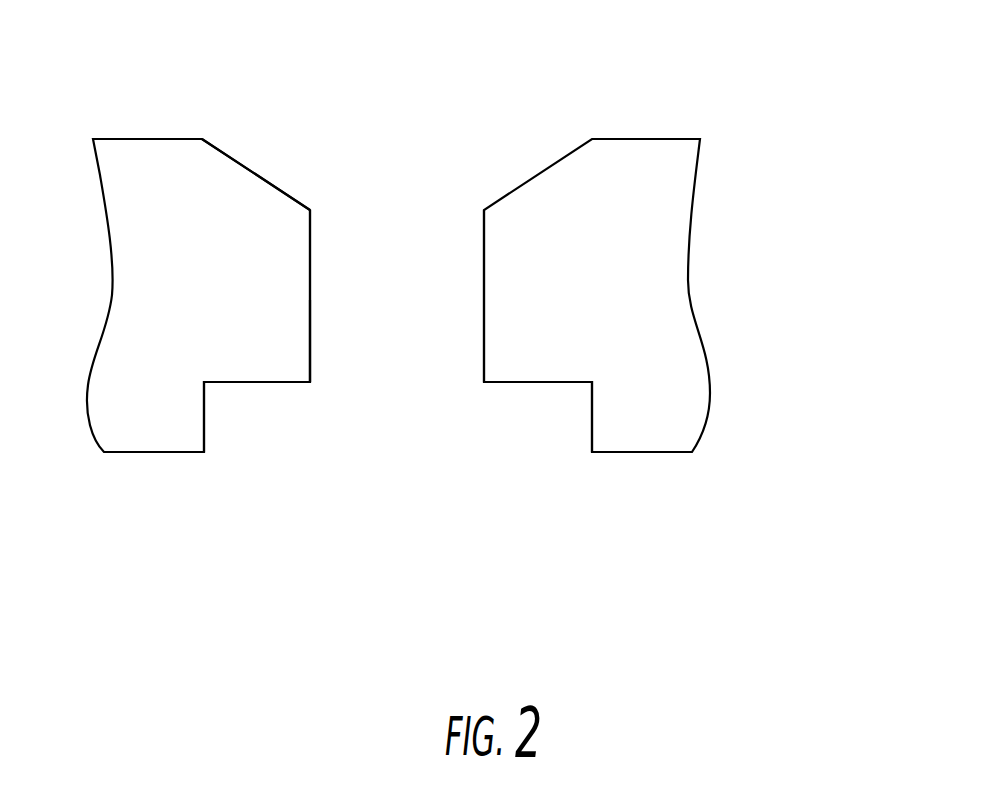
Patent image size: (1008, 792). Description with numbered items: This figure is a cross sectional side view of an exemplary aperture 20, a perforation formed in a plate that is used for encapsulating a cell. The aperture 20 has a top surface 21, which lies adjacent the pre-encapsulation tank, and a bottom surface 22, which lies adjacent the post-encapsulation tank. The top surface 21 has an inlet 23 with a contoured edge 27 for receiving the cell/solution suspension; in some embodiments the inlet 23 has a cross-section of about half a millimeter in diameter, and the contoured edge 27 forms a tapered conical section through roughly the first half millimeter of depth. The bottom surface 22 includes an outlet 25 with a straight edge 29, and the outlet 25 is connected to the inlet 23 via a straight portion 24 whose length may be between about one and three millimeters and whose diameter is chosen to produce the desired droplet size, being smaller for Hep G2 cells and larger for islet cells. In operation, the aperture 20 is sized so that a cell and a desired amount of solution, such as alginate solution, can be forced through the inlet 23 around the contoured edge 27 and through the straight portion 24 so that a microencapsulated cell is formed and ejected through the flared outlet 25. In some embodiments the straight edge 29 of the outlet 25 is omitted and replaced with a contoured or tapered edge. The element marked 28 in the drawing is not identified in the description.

The aperture 20 is at (813, 127).
The top surface 21 is at (126, 125).
The bottom surface 22 is at (169, 475).
The inlet 23 is at (456, 130).
The straight portion 24 is at (445, 274).
The outlet 25 is at (509, 434).
The contoured edge 27 is at (277, 158).
The inner face of first half member 28 is at (322, 331).
The straight edge 29 is at (217, 433).